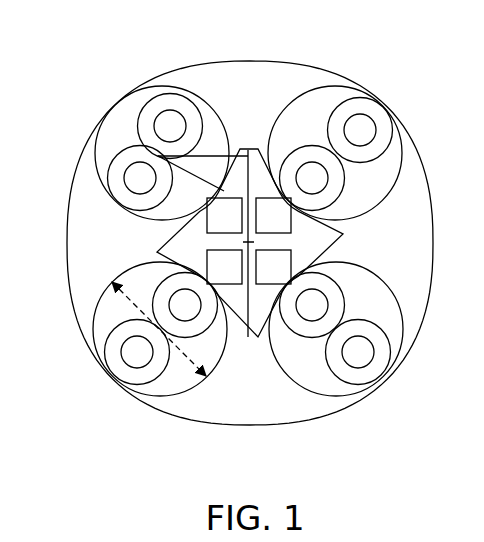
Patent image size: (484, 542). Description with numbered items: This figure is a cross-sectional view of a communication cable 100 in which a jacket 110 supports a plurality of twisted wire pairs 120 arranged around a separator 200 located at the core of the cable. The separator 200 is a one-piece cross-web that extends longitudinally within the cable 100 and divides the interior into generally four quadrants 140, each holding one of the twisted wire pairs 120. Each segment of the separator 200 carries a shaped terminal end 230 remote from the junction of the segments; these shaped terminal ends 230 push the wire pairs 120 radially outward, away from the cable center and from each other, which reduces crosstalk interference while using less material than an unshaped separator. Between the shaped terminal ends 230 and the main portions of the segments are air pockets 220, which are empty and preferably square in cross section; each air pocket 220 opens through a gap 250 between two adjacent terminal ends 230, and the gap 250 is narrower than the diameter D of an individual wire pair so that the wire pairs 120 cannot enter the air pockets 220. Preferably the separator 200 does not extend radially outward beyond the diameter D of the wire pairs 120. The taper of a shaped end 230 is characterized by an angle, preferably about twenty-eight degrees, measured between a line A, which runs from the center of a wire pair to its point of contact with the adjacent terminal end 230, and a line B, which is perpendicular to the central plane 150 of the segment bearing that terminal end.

The cable 100 is at (384, 70).
The jacket 110 is at (415, 340).
The twisted wire pairs 120 is at (112, 131).
The quadrants 140 is at (299, 76).
The central plane 150 is at (272, 168).
The separator 200 is at (264, 264).
The air pockets 220 is at (226, 217).
The shaped terminal ends 230 is at (250, 336).
The gap 250 is at (287, 218).
The line A is at (202, 182).
The line B is at (213, 154).
The diameter of the wire pairs D is at (127, 307).